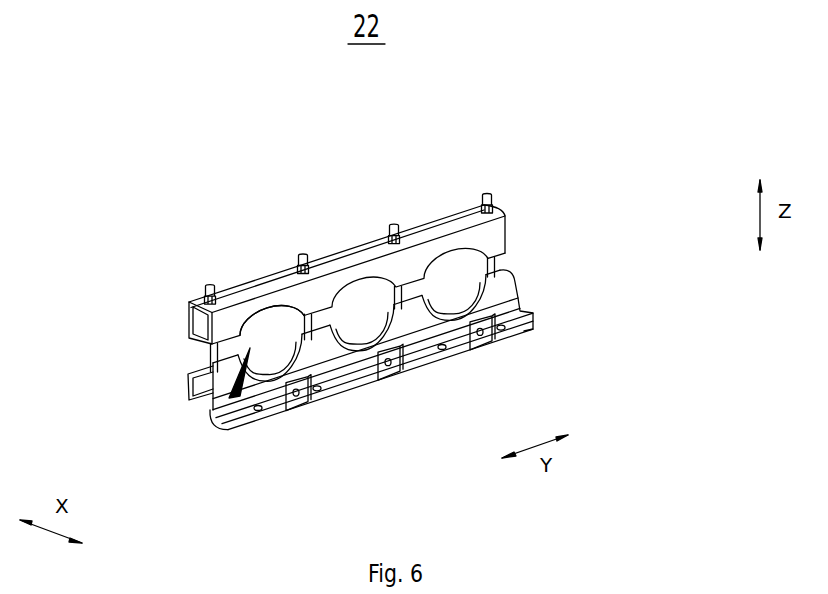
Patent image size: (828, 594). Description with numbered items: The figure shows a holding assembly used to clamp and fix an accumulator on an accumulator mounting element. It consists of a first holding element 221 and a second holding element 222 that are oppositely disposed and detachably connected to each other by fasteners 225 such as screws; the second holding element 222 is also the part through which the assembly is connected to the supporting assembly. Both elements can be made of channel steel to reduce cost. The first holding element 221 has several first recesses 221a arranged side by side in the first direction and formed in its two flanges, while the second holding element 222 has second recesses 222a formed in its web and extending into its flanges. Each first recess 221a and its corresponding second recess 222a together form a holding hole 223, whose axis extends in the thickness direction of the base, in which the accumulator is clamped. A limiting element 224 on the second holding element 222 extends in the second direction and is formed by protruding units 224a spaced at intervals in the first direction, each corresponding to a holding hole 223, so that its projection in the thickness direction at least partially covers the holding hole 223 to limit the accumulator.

The first holding element 221 is at (465, 207).
The first recess 221a is at (267, 315).
The second holding element 222 is at (510, 302).
The second recess 222a is at (264, 411).
The holding hole 223 is at (235, 396).
The limiting element 224 is at (390, 387).
The protruding unit 224a is at (308, 404).
The fastener 225 is at (493, 262).